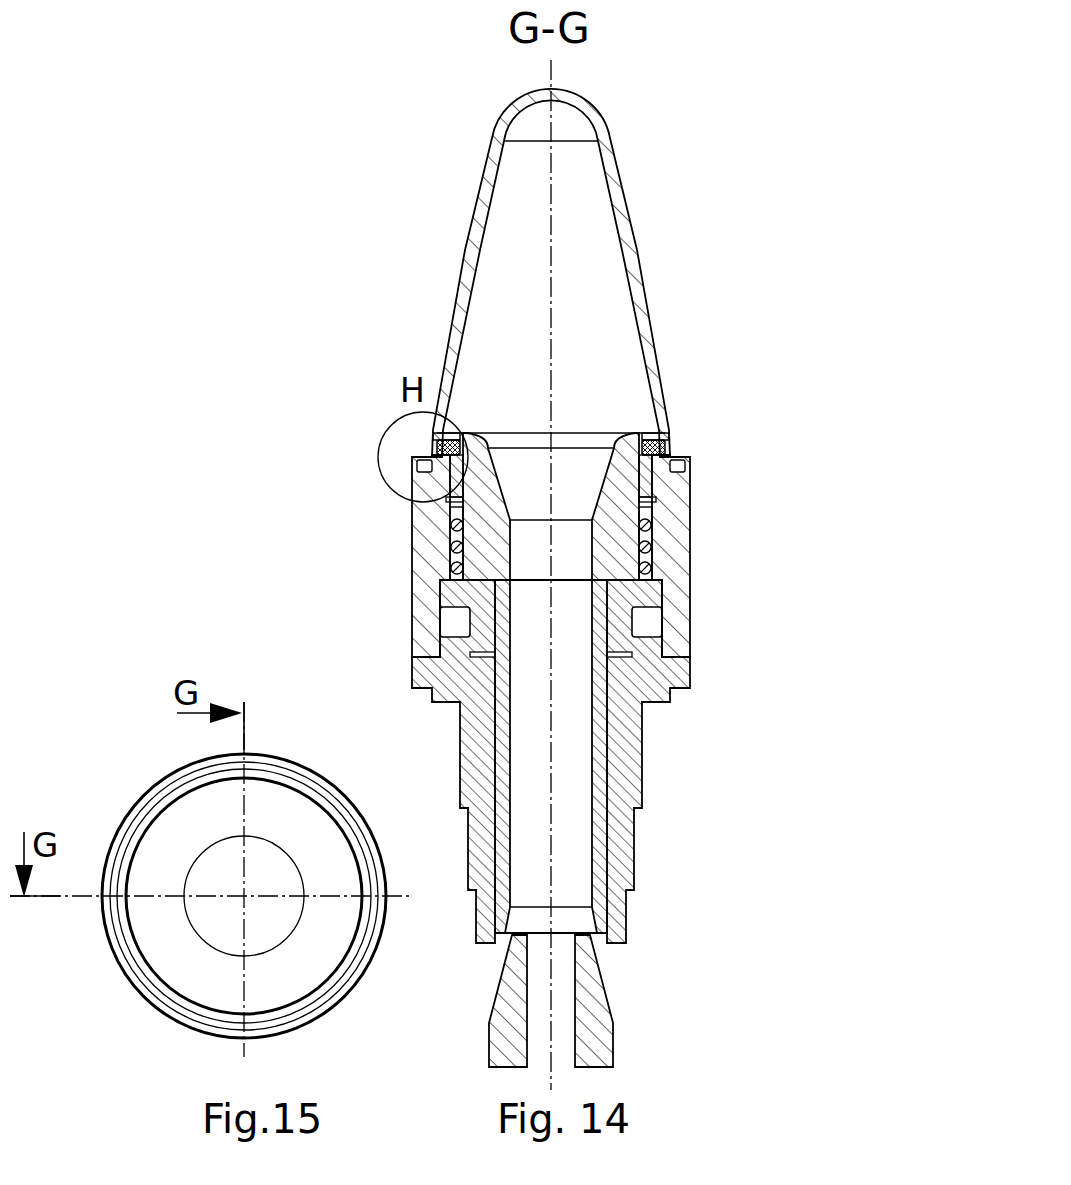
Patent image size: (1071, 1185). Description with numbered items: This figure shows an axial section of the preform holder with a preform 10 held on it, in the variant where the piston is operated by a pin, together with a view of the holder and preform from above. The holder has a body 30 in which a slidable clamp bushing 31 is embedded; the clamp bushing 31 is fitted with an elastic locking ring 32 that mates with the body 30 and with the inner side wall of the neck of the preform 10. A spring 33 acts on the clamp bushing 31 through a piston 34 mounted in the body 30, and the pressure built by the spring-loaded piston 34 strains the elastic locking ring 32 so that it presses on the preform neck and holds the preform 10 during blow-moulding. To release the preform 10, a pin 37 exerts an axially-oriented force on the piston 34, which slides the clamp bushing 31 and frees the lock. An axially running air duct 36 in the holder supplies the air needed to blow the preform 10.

In FIG. 14, the preform 10 is at (615, 165).
In FIG. 15, the preform 10 is at (140, 817).
In FIG. 14, the body 30 is at (682, 585).
In FIG. 14, the clamp bushing 31 is at (662, 436).
In FIG. 14, the elastic locking ring 32 is at (668, 444).
In FIG. 14, the spring 33 is at (655, 542).
In FIG. 14, the piston 34 is at (688, 688).
In FIG. 14, the air duct 36 is at (562, 835).
In FIG. 14, the pin 37 is at (600, 978).